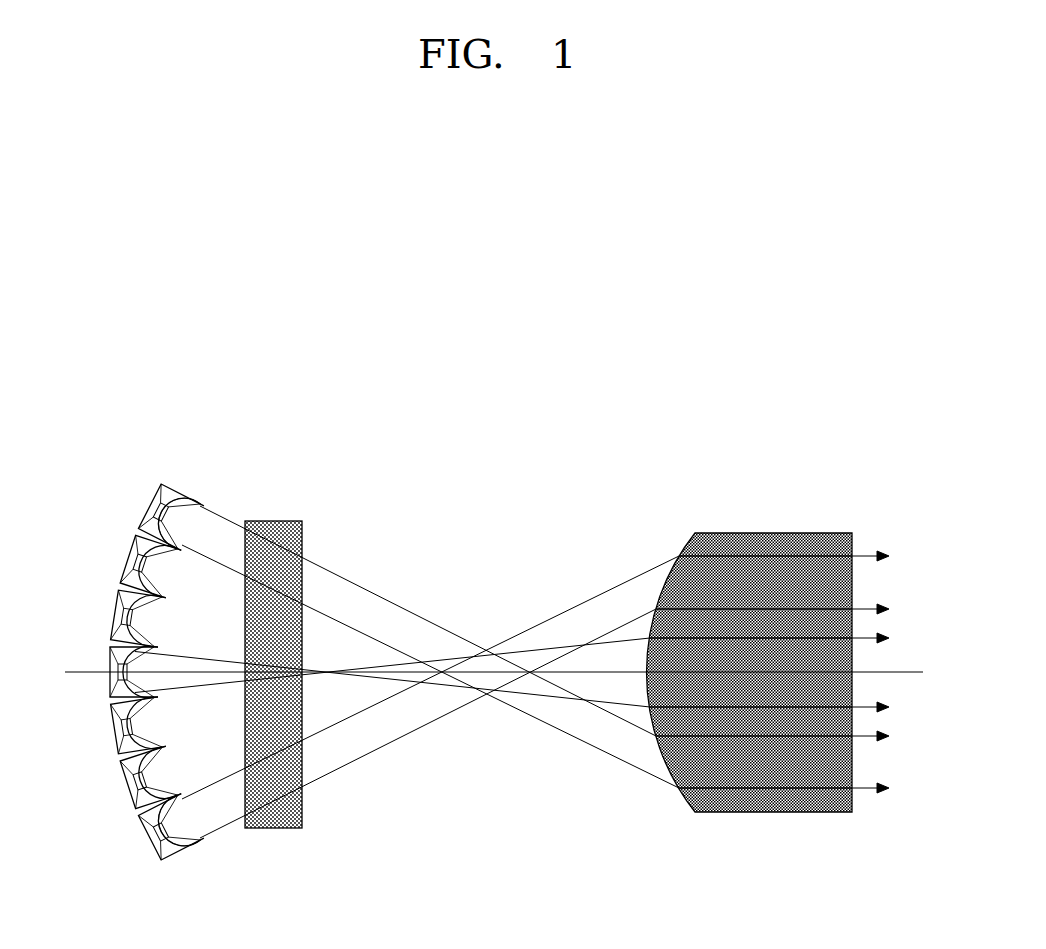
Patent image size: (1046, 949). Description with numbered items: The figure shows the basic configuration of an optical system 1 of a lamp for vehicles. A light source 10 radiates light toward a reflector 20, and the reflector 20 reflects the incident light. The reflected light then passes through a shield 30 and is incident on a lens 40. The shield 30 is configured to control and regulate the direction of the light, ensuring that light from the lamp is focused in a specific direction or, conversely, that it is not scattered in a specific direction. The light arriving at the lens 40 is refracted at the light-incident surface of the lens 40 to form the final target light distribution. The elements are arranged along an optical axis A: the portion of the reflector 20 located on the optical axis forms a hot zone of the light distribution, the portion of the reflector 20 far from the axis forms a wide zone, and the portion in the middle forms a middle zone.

The optical system 1 is at (770, 429).
The light source 10 is at (118, 755).
The reflector 20 is at (110, 706).
The shield 30 is at (283, 530).
The lens 40 is at (750, 533).